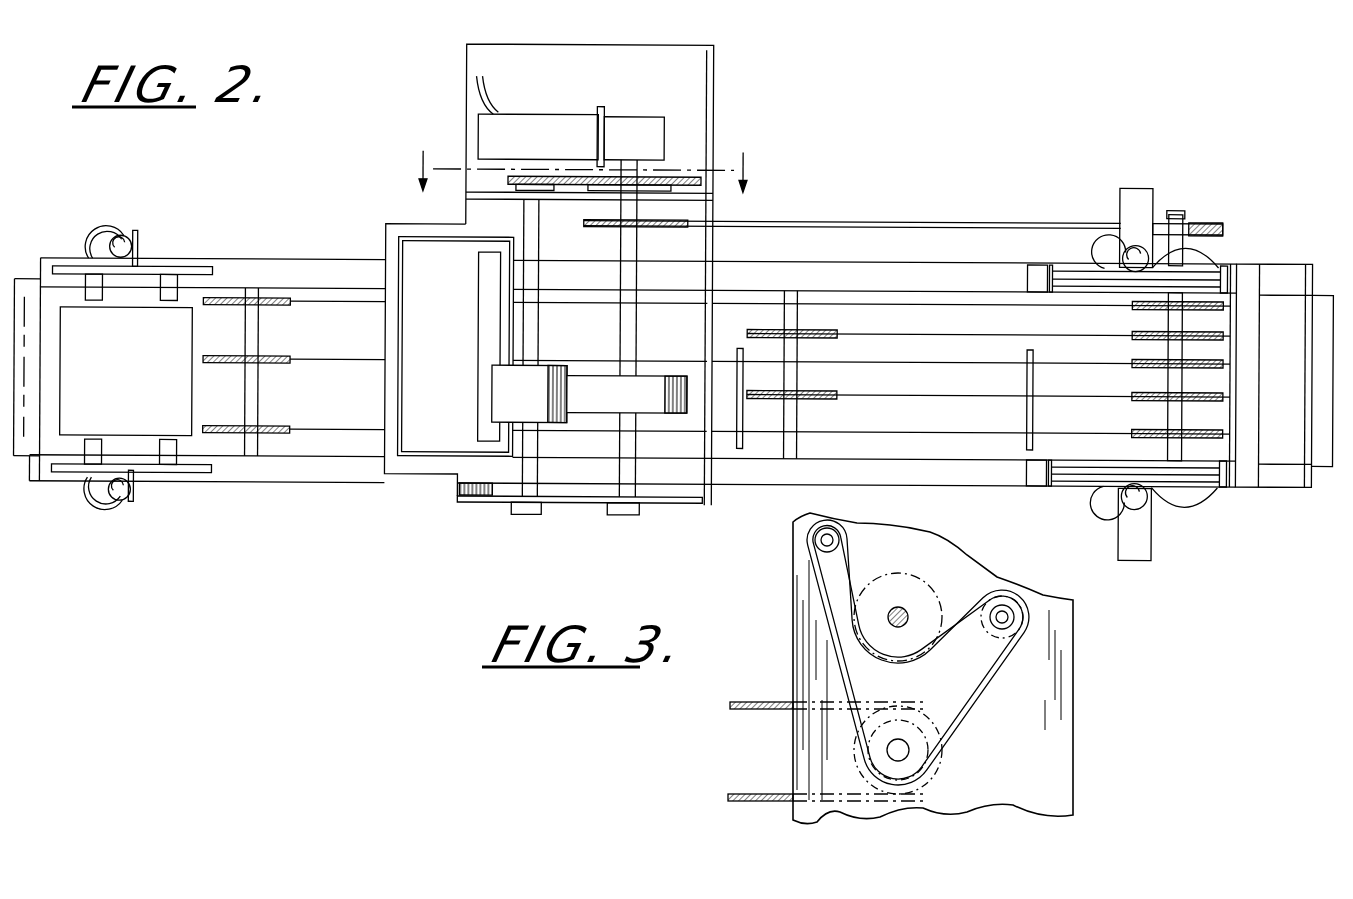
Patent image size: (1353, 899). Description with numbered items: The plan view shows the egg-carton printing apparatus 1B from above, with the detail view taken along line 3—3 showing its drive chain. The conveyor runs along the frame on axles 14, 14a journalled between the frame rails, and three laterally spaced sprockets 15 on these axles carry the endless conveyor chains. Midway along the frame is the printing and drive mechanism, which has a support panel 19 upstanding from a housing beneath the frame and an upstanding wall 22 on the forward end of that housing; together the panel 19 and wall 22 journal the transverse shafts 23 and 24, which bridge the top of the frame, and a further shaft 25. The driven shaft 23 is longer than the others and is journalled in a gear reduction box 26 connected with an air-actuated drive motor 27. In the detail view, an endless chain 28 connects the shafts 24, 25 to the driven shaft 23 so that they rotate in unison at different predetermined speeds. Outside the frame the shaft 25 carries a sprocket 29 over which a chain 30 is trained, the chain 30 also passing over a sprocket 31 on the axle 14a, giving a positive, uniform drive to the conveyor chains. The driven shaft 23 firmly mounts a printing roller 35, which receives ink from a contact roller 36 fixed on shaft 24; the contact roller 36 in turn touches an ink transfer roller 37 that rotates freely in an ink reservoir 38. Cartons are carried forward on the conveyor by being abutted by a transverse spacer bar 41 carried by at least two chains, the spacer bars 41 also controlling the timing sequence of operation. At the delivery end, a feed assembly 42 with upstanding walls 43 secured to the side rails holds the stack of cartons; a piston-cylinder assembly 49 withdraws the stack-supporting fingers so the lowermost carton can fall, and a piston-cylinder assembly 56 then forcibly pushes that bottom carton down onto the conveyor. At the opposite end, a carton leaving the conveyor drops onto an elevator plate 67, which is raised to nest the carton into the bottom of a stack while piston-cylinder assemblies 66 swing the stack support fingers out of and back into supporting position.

In FIG. 2, the apparatus (second embodiment) 1B is at (719, 128).
In FIG. 2, the line 3— 3 is at (582, 172).
In FIG. 2, the axle 14 is at (263, 403).
In FIG. 2, the axle 14a is at (1178, 208).
In FIG. 2, the sprockets 15 is at (210, 366).
In FIG. 2, the support panel 19 is at (468, 214).
In FIG. 2, the upstanding wall 22 is at (465, 504).
In FIG. 2, the driven shaft 23 is at (634, 345).
In FIG. 3, the driven shaft 23 is at (905, 610).
In FIG. 2, the shaft 24 is at (527, 492).
In FIG. 3, the shaft 24 is at (1016, 618).
In FIG. 3, the shaft 25 is at (905, 752).
In FIG. 2, the gear reduction box 26 is at (614, 130).
In FIG. 2, the drive motor 27 is at (500, 135).
In FIG. 3, the endless chain 28 is at (996, 688).
In FIG. 2, the sprocket 29 is at (660, 229).
In FIG. 3, the sprocket 29 is at (848, 750).
In FIG. 2, the chain 30 is at (933, 220).
In FIG. 3, the chain 30 is at (727, 796).
In FIG. 2, the sprocket 31 is at (1202, 222).
In FIG. 2, the printing roller 35 is at (666, 410).
In FIG. 2, the contact roller 36 is at (500, 406).
In FIG. 2, the ink transfer roller 37 is at (485, 332).
In FIG. 2, the ink reservoir 38 is at (414, 262).
In FIG. 2, the spacer bar 41 is at (1026, 406).
In FIG. 2, the feed assembly 42 is at (1083, 256).
In FIG. 2, the upstanding walls 43 is at (1220, 265).
In FIG. 2, the piston-cylinder assembly 49 is at (1130, 186).
In FIG. 2, the piston-cylinder assembly 56 is at (1130, 498).
In FIG. 2, the piston-cylinder assembly 66 is at (134, 230).
In FIG. 2, the elevator plate 67 is at (131, 369).